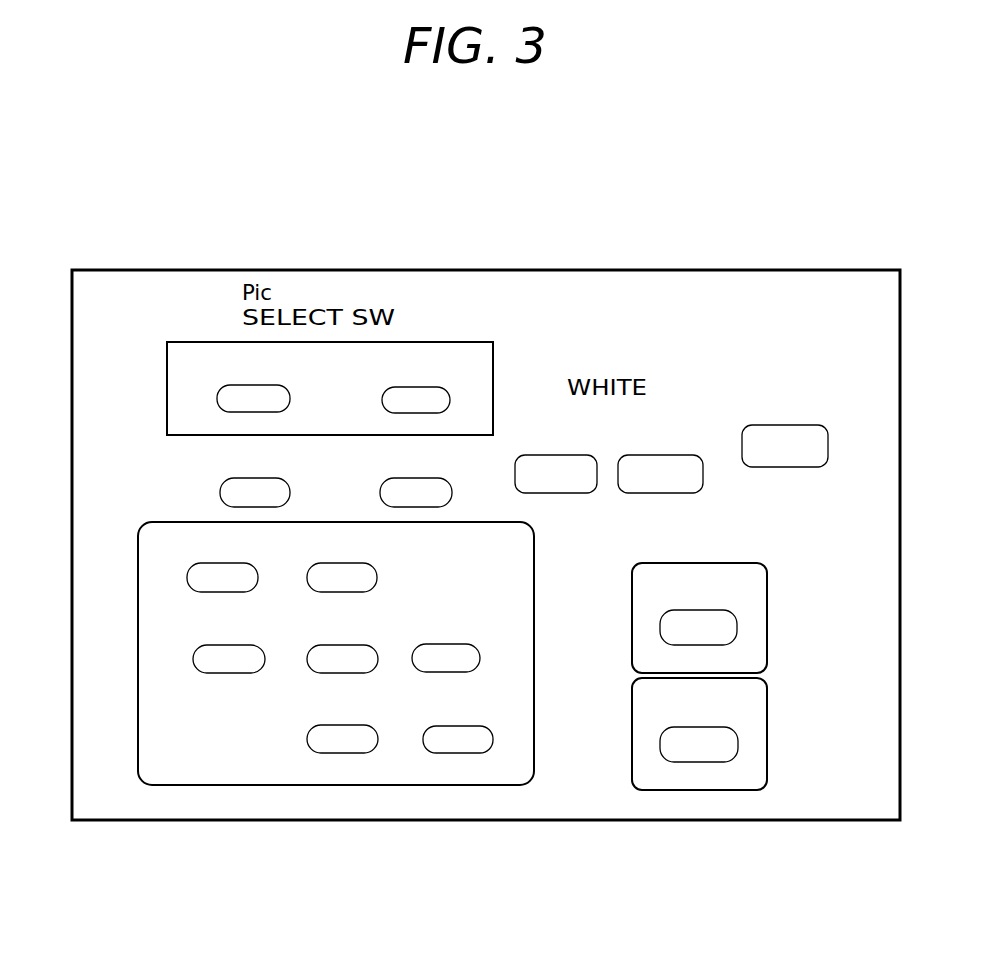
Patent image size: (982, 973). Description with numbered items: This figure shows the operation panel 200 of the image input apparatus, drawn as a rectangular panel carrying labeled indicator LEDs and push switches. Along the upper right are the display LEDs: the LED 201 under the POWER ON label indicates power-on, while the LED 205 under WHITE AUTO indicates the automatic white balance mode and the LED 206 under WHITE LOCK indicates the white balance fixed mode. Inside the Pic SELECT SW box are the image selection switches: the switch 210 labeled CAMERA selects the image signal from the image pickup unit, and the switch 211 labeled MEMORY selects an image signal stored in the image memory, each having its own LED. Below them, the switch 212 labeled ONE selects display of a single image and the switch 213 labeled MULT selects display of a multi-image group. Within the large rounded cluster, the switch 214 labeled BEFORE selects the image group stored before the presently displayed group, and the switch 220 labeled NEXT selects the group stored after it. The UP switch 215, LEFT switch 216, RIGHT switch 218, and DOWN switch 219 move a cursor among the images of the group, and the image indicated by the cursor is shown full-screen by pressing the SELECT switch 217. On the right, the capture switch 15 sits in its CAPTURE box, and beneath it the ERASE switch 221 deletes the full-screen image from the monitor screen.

The operation panel 200 is at (763, 270).
The LED 201 is at (795, 457).
The LED 205 is at (558, 485).
The LED 206 is at (670, 485).
The switch 210 is at (228, 397).
The switch 211 is at (442, 398).
The switch 212 is at (230, 485).
The switch 213 is at (387, 492).
The switch 214 is at (197, 577).
The UP switch 215 is at (372, 573).
The LEFT switch 216 is at (210, 662).
The SELECT switch 217 is at (315, 660).
The RIGHT switch 218 is at (469, 654).
The DOWN switch 219 is at (335, 745).
The switch 220 is at (451, 744).
The capture switch 15 is at (730, 627).
The ERASE switch 221 is at (732, 740).